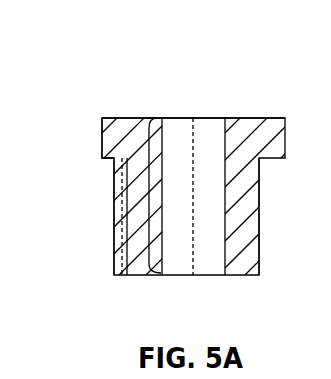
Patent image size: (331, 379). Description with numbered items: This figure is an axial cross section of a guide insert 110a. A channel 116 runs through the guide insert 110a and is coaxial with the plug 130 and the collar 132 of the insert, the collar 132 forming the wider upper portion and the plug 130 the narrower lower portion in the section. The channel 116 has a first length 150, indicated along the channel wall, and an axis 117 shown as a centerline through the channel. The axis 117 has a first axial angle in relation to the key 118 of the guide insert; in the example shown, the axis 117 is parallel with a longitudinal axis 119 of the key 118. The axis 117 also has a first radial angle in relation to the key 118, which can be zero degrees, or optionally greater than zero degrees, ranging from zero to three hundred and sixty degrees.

The guide insert 110a is at (271, 104).
The channel 116 is at (177, 118).
The axis 117 is at (193, 123).
The key 118 is at (114, 248).
The longitudinal axis 119 is at (122, 172).
The plug 130 is at (260, 243).
The collar 132 is at (101, 148).
The first length 150 is at (150, 212).